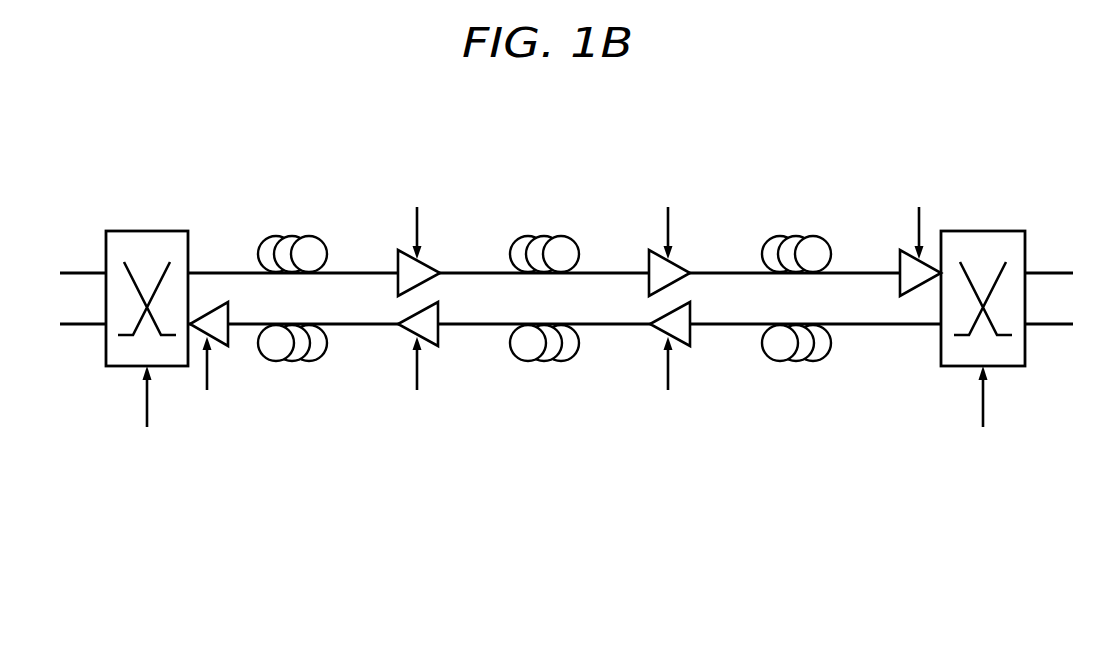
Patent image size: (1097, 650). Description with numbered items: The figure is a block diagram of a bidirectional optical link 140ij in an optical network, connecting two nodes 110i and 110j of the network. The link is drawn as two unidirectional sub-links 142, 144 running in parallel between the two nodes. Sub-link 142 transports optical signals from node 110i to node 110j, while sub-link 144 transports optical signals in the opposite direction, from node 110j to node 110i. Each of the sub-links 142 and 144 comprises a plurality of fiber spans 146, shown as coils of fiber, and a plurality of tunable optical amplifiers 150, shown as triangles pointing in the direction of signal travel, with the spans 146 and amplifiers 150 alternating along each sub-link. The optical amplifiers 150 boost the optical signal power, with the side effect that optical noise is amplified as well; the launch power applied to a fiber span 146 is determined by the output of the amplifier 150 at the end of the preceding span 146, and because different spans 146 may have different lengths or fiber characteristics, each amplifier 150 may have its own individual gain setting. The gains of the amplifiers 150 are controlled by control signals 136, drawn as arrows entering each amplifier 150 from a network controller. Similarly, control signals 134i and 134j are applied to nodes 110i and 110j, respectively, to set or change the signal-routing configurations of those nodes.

The node 110i is at (138, 231).
The node 110j is at (978, 231).
The control signal 134i is at (147, 402).
The control signal 134j is at (985, 402).
The control signal 136 is at (417, 207).
The optical link 140ij is at (566, 390).
The sub-link 142 is at (361, 271).
The sub-link 144 is at (382, 327).
The fiber span 146 is at (294, 236).
The tunable optical amplifier 150 is at (439, 266).